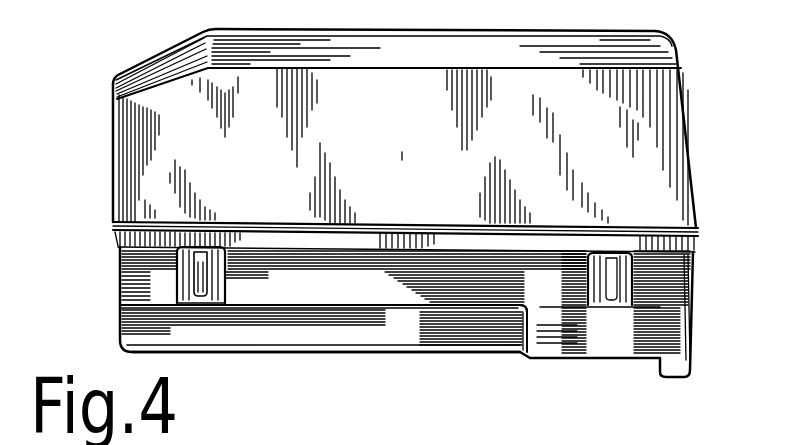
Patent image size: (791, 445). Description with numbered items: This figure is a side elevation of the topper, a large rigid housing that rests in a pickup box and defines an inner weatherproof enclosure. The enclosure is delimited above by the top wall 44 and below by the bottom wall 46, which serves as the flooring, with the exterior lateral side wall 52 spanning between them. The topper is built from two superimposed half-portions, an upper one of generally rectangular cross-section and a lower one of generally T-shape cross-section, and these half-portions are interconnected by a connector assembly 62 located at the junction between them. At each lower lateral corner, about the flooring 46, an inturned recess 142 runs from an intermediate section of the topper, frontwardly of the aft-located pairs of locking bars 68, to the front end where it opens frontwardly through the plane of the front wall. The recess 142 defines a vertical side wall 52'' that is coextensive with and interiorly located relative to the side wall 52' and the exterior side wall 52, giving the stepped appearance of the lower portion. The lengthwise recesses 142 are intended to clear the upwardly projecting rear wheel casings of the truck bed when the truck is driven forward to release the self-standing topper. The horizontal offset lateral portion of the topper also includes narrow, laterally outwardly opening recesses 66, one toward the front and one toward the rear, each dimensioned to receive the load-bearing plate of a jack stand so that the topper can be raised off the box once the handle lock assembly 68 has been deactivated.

The top wall 44 is at (627, 30).
The lateral side wall 52 is at (403, 146).
The side wall 52' is at (406, 312).
The vertical side wall 52'' is at (349, 327).
The connector assembly 62 is at (111, 222).
The narrow recess 66 is at (177, 270).
The locking bars 68 is at (177, 284).
The bottom wall 46 is at (553, 358).
The inturned recess 142 is at (340, 330).